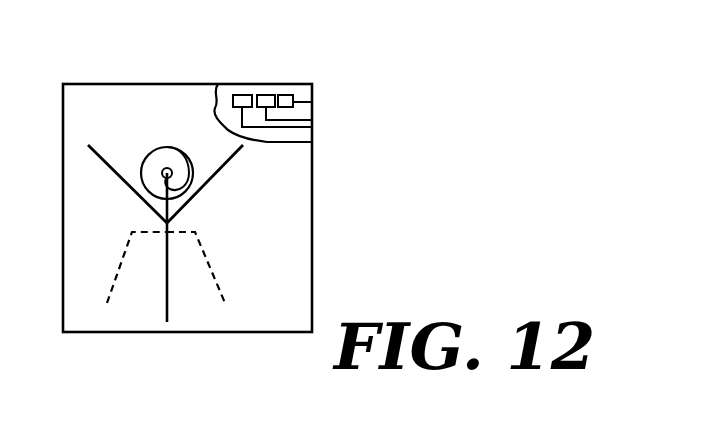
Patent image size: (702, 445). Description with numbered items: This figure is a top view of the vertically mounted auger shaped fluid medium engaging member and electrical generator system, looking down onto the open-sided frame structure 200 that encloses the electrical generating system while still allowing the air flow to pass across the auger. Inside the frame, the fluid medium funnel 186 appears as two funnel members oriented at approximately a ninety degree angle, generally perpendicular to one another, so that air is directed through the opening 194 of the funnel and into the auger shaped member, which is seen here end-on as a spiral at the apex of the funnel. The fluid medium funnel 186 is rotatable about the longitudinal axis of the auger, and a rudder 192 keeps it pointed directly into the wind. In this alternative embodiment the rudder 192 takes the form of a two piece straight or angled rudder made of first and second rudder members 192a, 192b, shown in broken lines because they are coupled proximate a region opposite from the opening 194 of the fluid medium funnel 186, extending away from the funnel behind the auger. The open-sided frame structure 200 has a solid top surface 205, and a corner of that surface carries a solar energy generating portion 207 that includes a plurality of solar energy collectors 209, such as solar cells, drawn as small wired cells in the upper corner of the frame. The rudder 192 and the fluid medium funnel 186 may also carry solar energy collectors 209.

The fluid medium funnel 186 is at (121, 200).
The rudder 192 is at (167, 297).
The first rudder member 192a is at (113, 273).
The second rudder member 192b is at (212, 265).
The opening 194 is at (138, 138).
The open-sided frame structure 200 is at (217, 332).
The solid top surface 205 is at (267, 198).
The solar energy generating portion 207 is at (250, 95).
The solar energy collectors 209 is at (315, 102).